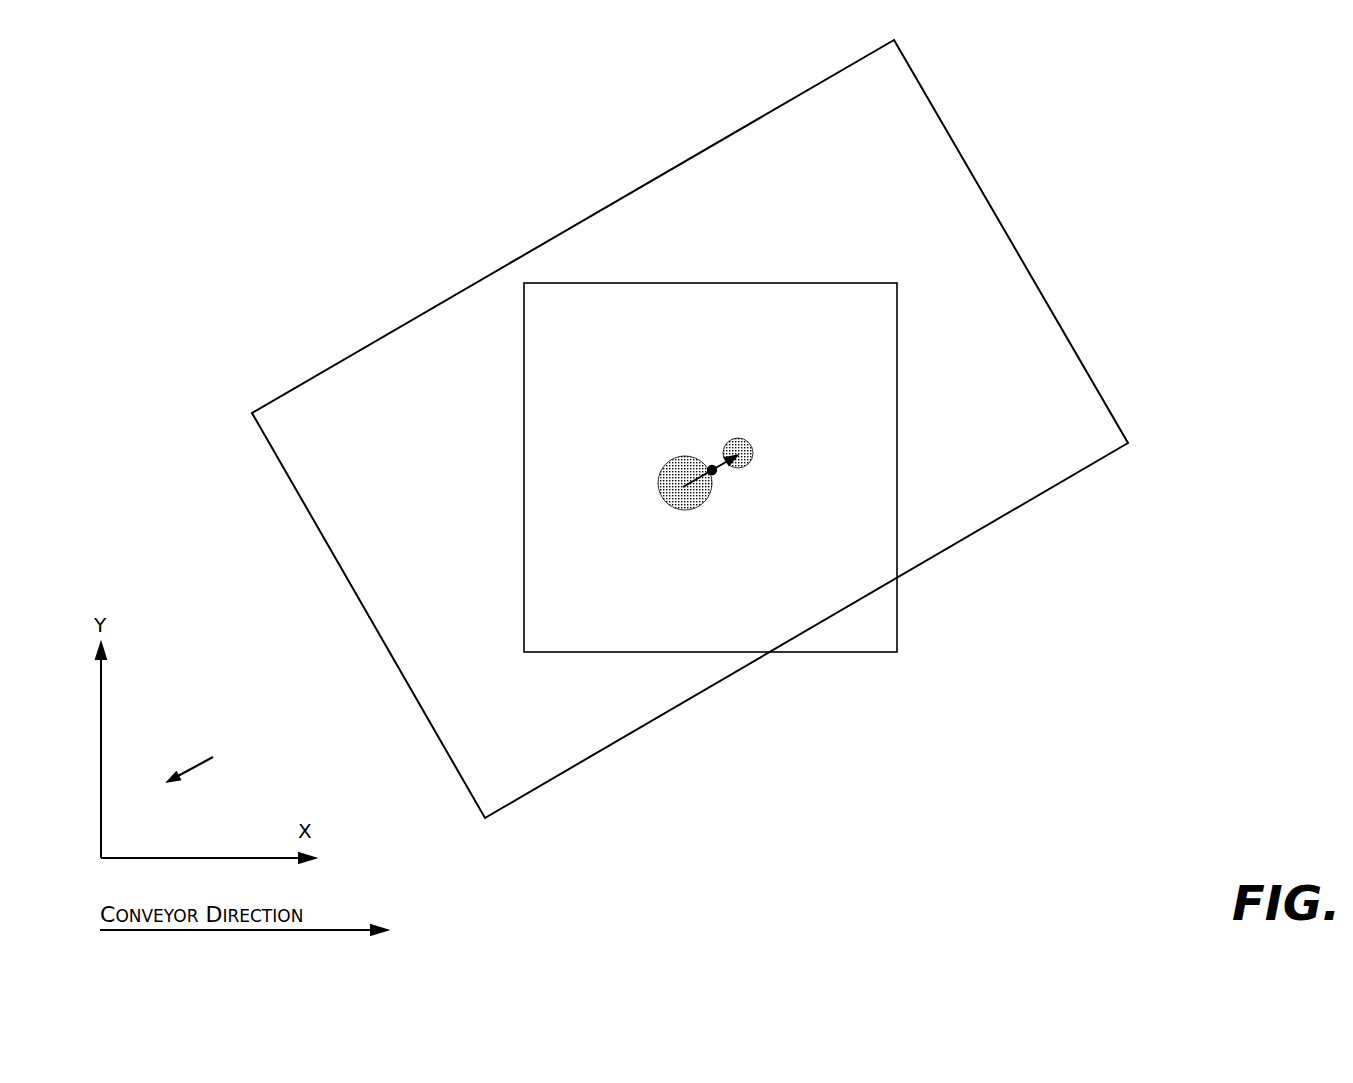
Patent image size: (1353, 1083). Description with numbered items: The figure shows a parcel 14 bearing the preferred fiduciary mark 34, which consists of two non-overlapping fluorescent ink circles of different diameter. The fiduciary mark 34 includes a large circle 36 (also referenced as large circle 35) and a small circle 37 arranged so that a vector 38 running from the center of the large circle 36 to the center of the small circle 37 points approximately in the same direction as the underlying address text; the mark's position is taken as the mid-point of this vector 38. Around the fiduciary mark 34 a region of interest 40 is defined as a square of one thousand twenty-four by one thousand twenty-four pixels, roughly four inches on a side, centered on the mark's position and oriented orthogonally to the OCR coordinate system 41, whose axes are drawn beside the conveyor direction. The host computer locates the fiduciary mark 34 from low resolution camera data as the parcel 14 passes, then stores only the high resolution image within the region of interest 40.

The parcel 14 is at (395, 328).
The region of interest 40 is at (642, 283).
The large circle 36 is at (667, 468).
The small circle 37 is at (750, 458).
The large circle 35 is at (712, 468).
The vector 38 is at (717, 473).
The fiduciary mark 34 is at (739, 541).
The OCR coordinate system 41 is at (201, 753).